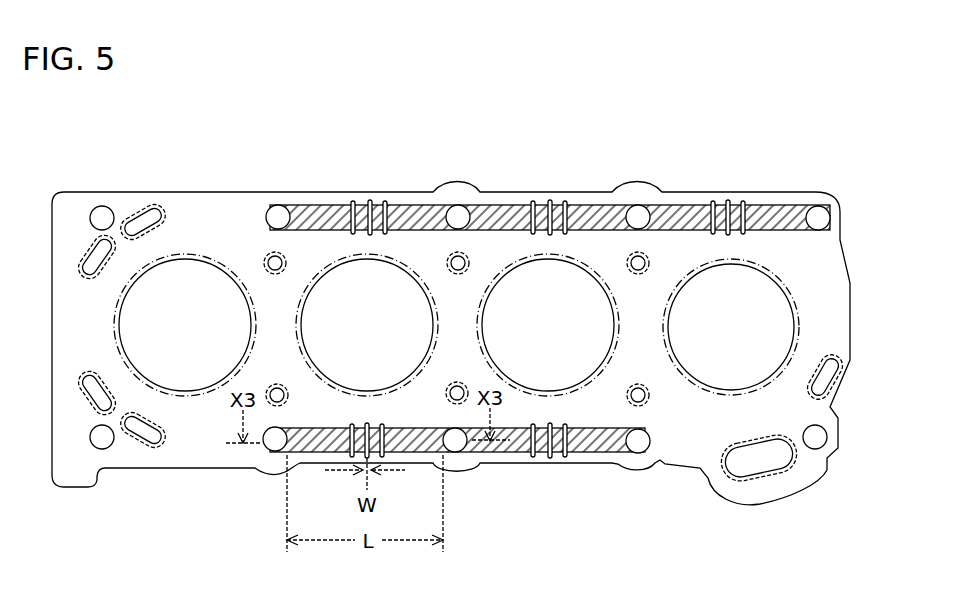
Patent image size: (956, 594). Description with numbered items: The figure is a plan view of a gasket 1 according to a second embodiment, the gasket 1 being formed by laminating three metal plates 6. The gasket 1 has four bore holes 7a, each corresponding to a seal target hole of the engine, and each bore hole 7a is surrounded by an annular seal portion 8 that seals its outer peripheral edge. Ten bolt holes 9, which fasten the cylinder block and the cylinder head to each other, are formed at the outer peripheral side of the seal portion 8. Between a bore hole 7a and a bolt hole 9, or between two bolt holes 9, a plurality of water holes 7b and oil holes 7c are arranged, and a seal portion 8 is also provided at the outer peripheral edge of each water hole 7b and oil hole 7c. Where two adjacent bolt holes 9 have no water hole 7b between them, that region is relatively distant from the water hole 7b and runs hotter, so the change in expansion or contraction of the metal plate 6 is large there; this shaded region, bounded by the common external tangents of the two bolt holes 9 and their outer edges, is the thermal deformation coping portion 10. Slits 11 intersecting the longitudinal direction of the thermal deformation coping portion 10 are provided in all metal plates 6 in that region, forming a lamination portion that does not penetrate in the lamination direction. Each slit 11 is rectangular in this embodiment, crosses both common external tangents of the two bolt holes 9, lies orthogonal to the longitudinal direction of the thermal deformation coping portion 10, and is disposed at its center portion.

The gasket 1 is at (699, 141).
The metal plate 6 is at (190, 452).
The bore hole 7a is at (125, 325).
The water hole 7b is at (142, 214).
The oil hole 7c is at (775, 478).
The seal portion 8 is at (83, 252).
The bolt hole 9 is at (98, 210).
The thermal deformation coping portion 10 is at (410, 205).
The slit 11 is at (531, 202).